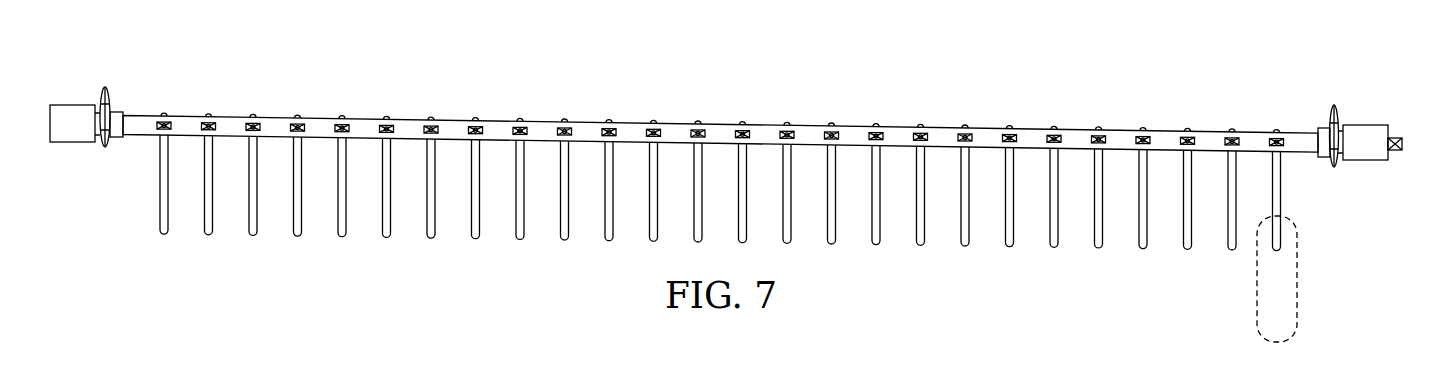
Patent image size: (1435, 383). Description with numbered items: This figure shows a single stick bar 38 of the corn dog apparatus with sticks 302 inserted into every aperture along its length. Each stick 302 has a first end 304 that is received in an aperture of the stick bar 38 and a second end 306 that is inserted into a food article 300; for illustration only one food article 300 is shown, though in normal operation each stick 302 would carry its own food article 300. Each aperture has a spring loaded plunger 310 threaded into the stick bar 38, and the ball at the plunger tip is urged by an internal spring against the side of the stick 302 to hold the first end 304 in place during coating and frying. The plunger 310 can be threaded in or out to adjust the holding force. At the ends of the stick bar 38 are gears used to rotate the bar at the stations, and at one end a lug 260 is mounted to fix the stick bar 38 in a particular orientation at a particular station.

The stick bar 38 is at (320, 125).
The lug 260 is at (1402, 152).
The food article 300 is at (1298, 285).
The stick 302 is at (334, 222).
The first end 304 is at (430, 119).
The second end 306 is at (518, 241).
The spring loaded plunger 310 is at (754, 133).